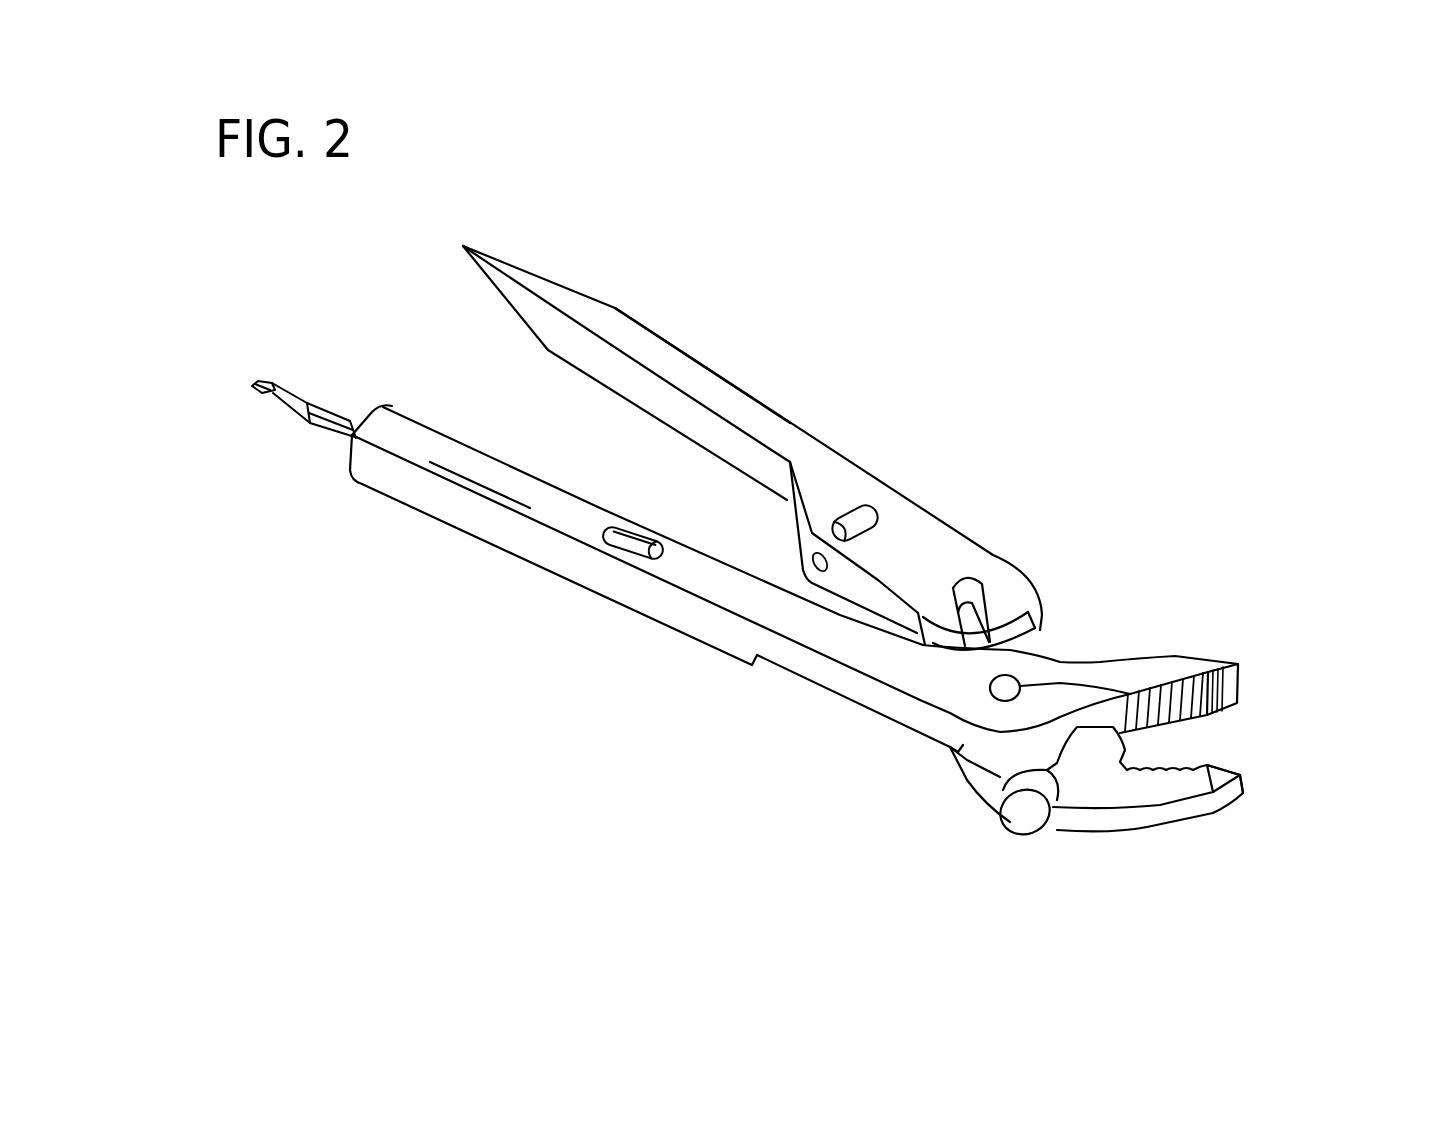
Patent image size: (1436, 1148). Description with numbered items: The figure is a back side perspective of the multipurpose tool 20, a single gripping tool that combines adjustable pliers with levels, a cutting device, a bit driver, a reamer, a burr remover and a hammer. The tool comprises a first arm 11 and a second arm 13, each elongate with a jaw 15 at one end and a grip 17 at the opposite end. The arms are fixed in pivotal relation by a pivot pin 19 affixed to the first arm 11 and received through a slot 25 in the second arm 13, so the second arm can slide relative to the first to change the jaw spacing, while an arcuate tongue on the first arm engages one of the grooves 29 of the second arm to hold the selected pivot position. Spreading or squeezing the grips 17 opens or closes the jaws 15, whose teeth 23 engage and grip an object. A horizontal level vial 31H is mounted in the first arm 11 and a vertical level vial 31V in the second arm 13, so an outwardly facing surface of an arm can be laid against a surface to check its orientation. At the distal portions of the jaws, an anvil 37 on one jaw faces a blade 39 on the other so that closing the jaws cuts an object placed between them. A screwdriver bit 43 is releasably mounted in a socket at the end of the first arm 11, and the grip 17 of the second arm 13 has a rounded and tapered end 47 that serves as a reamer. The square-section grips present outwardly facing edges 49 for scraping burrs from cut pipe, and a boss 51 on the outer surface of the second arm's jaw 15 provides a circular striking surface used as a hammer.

The first arm 11 is at (624, 631).
The second arm 13 is at (849, 424).
The jaw 15 is at (1174, 670).
The grip 17 is at (620, 338).
The pivot pin 19 is at (1103, 660).
The multipurpose tool 20 is at (915, 284).
The teeth 23 is at (1168, 707).
The slot 25 is at (968, 600).
The grooves 29 is at (1027, 604).
The horizontal level vial 31H is at (634, 540).
The vertical level vial 31V is at (863, 513).
The anvil 37 is at (1223, 690).
The blade 39 is at (1237, 777).
The screwdriver bit 43 is at (267, 384).
The rounded and tapered end 47 is at (463, 246).
The outwardly facing edges 49 is at (728, 380).
The boss 51 is at (1025, 815).